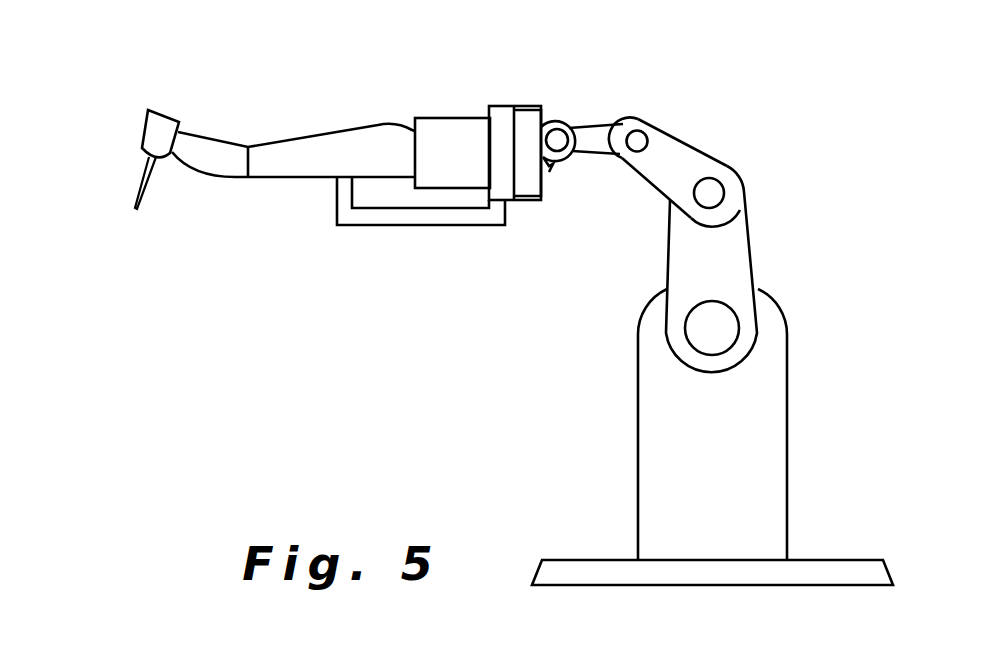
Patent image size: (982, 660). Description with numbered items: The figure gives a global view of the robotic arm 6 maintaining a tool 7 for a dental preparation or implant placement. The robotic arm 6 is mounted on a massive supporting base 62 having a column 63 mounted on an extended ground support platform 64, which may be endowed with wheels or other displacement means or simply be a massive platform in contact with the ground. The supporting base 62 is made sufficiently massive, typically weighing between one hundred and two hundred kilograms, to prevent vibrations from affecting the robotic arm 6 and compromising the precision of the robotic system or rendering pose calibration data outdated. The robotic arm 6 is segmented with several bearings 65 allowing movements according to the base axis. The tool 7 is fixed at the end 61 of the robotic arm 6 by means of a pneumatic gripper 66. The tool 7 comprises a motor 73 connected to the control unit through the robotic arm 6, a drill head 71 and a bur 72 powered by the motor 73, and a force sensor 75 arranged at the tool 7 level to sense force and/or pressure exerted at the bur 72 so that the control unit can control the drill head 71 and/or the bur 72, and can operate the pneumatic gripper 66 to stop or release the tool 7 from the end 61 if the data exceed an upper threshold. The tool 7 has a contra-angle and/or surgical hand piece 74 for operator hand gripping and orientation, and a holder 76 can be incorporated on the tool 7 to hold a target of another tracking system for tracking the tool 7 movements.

The tool 7 is at (252, 128).
The drill head 71 is at (158, 130).
The bur 72 is at (135, 197).
The motor 73 is at (450, 125).
The contra-angle and/or surgical hand piece 74 is at (300, 160).
The force sensor 75 is at (503, 118).
The holder 76 is at (427, 217).
The pneumatic gripper 66 is at (528, 188).
The end of the robotic arm 61 is at (560, 118).
The bearings 65 is at (706, 193).
The robotic arm 6 is at (725, 252).
The supporting base 62 is at (826, 375).
The column 63 is at (765, 510).
The ground support platform 64 is at (853, 573).